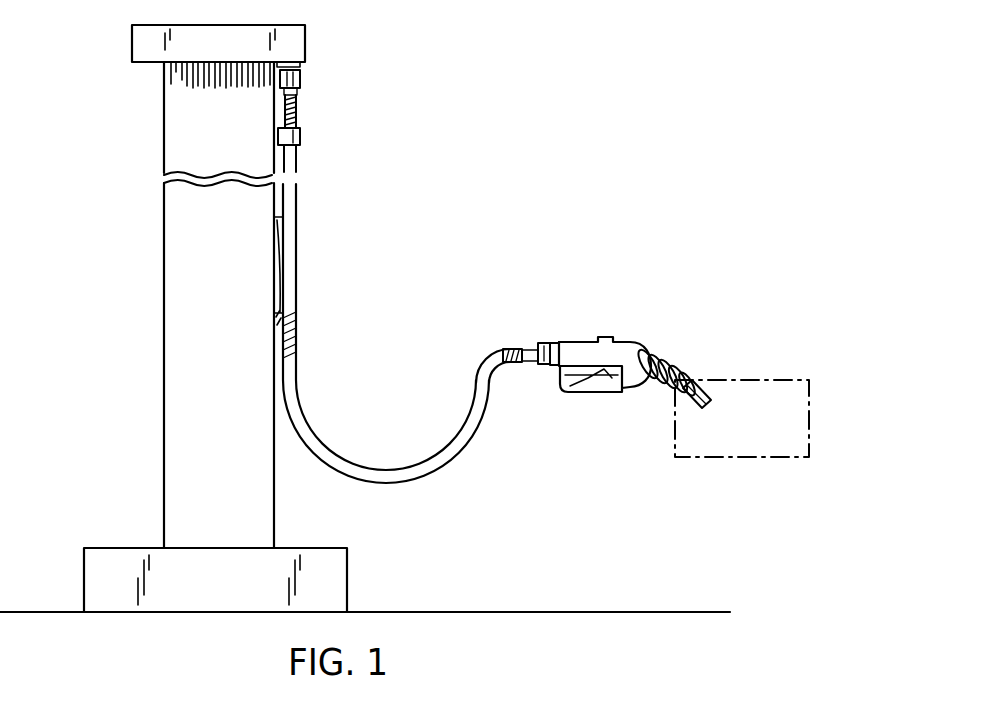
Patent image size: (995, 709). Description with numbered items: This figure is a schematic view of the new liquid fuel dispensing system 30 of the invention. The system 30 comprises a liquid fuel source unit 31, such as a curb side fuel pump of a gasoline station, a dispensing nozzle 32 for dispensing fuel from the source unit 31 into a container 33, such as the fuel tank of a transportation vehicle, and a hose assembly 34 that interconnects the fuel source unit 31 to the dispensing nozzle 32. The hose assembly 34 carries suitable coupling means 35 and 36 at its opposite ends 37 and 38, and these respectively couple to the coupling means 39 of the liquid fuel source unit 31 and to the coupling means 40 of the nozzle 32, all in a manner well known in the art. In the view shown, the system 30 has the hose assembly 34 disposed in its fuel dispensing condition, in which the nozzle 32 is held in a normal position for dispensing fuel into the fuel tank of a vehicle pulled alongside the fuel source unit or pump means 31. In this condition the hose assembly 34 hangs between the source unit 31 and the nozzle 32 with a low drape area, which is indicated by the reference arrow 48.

The liquid fuel dispensing system 30 is at (472, 229).
The liquid fuel source unit 31 is at (176, 305).
The dispensing nozzle 32 is at (617, 355).
The container 33 is at (809, 395).
The hose assembly 34 is at (297, 373).
The coupling means 35 is at (299, 80).
The coupling means 36 is at (542, 343).
The end of hose assembly 37 is at (299, 105).
The end of hose assembly 38 is at (508, 348).
The coupling means of fuel source unit 39 is at (300, 66).
The coupling means of nozzle 40 is at (554, 343).
The low drape area 48 is at (389, 488).